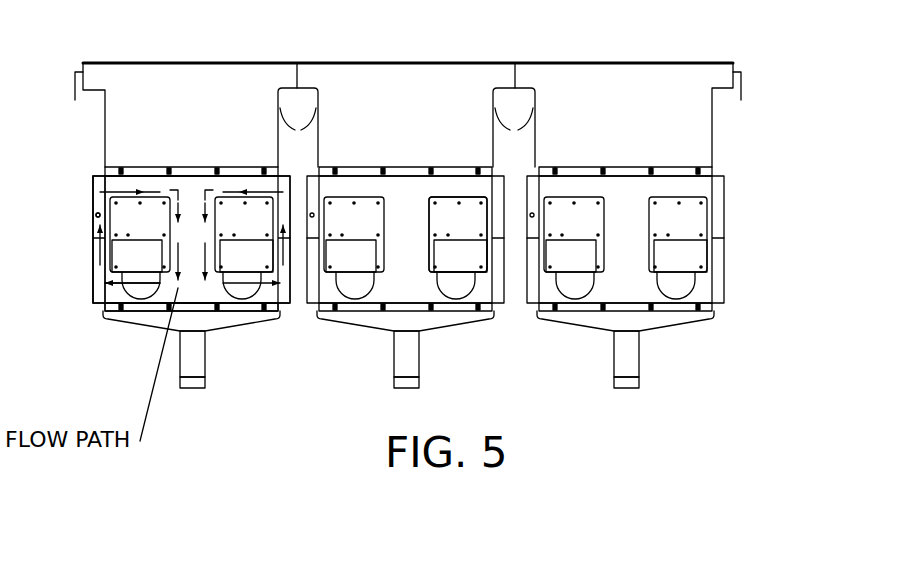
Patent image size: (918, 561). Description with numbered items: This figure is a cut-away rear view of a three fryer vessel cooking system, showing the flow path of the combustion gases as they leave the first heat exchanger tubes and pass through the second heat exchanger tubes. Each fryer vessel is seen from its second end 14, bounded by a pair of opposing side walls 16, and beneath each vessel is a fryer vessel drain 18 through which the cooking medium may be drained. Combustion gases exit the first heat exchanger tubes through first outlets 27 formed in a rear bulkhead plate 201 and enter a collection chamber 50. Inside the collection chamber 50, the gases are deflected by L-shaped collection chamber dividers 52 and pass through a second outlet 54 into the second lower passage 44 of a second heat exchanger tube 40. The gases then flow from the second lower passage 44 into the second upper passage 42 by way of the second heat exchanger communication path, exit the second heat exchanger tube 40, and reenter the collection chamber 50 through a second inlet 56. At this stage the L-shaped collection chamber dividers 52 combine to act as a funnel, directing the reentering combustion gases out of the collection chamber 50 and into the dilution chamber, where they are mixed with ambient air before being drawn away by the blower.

The second end 14 is at (119, 107).
The side walls 16 is at (752, 148).
The fryer vessel drain 18 is at (206, 357).
The first outlet 27 is at (140, 292).
The second heat exchanger tube 40 is at (93, 260).
The second upper passage 42 is at (90, 206).
The second lower passage 44 is at (98, 306).
The collection chamber 50 is at (280, 306).
The L-shaped collection chamber dividers 52 is at (237, 240).
The second outlet 54 is at (98, 282).
The second inlet 56 is at (93, 180).
The rear bulkhead plate 201 is at (465, 218).